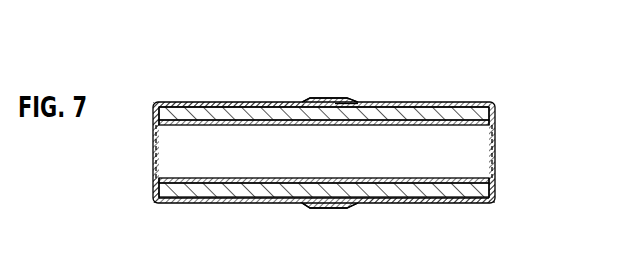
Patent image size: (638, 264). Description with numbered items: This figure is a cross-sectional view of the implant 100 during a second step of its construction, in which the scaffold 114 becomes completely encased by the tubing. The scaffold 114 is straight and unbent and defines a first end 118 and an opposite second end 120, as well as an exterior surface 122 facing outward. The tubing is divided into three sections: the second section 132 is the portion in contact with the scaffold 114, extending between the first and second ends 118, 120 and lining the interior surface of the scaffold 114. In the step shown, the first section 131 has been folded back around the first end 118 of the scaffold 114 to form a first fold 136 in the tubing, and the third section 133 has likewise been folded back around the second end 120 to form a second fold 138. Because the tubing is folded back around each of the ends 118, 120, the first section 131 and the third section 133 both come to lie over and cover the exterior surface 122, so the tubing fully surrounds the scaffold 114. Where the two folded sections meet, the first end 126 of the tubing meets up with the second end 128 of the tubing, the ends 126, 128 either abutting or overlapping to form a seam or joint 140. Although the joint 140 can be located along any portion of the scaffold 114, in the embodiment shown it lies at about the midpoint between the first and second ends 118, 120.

The implant 100 is at (474, 57).
The scaffold 114 is at (240, 190).
The first end 118 is at (497, 108).
The second end 120 is at (157, 112).
The exterior surface 122 is at (448, 198).
The first end 126 is at (305, 98).
The second end 128 is at (343, 103).
The first section 131 is at (404, 205).
The second section 132 is at (385, 180).
The third section 133 is at (215, 103).
The first fold 136 is at (497, 192).
The second fold 138 is at (155, 196).
The joint 140 is at (300, 208).